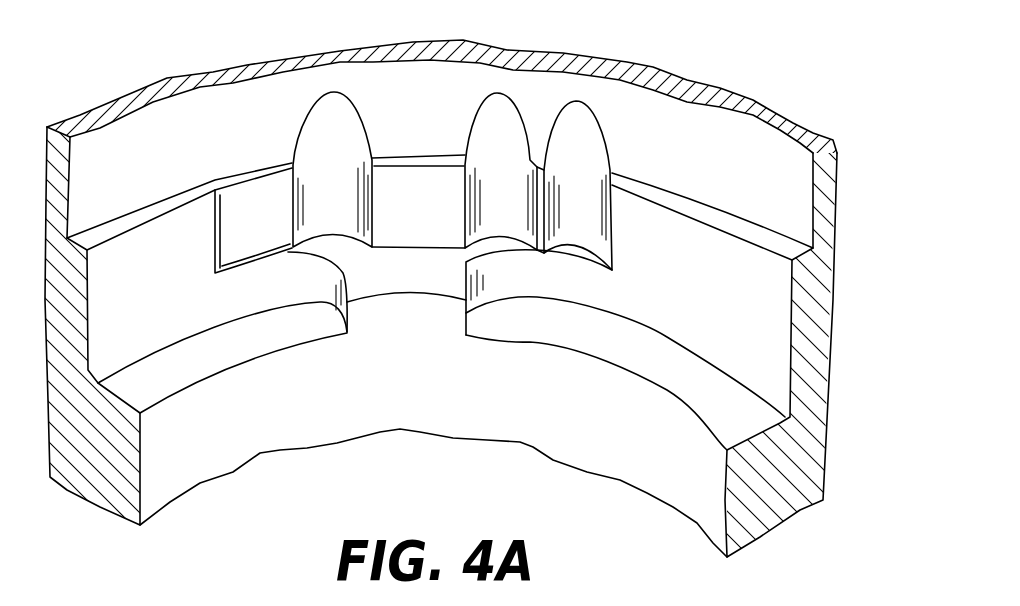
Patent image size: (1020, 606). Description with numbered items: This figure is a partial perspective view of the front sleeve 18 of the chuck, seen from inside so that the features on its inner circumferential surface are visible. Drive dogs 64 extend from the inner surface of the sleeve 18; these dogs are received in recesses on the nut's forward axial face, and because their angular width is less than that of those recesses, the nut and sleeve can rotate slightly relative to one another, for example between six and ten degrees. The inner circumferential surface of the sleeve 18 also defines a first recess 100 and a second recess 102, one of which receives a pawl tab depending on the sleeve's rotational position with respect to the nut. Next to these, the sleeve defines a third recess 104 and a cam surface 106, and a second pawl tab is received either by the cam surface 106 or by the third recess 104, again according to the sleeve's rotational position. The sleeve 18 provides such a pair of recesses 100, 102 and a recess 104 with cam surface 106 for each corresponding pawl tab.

The front sleeve 18 is at (722, 88).
The drive dogs 64 is at (418, 337).
The first recess 100 is at (487, 154).
The second recess 102 is at (595, 208).
The third recess 104 is at (321, 166).
The cam surface 106 is at (252, 198).